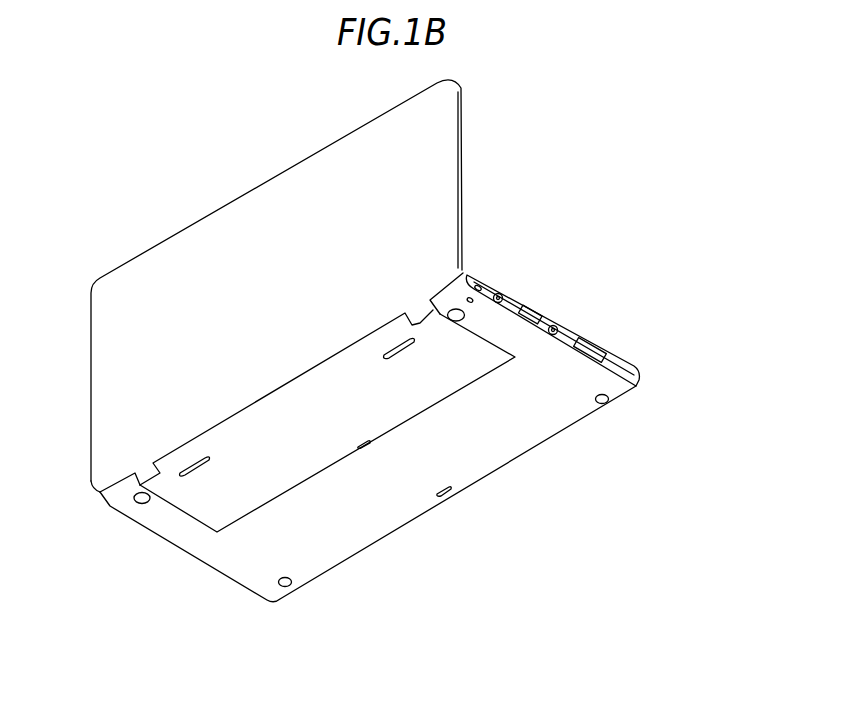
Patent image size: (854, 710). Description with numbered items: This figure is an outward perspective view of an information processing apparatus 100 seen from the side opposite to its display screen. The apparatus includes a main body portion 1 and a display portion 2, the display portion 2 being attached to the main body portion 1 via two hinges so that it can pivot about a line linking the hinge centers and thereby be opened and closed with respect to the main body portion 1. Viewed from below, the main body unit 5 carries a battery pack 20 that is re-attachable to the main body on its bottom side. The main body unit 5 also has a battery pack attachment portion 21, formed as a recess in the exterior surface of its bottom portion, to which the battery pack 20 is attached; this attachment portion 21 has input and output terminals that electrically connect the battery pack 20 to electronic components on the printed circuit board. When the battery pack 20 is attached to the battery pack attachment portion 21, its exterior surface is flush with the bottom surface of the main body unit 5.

The information processing apparatus 100 is at (226, 127).
The display portion 2 is at (194, 205).
The main body portion 1 is at (378, 553).
The main body unit 5 is at (463, 474).
The battery pack 20 is at (448, 350).
The battery pack attachment portion 21 is at (482, 378).